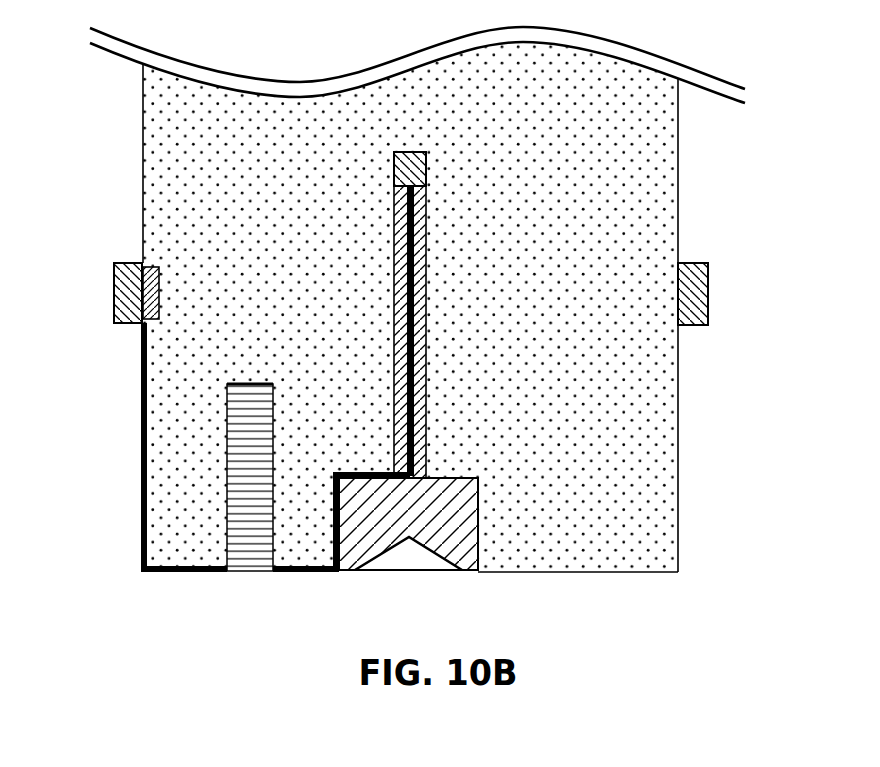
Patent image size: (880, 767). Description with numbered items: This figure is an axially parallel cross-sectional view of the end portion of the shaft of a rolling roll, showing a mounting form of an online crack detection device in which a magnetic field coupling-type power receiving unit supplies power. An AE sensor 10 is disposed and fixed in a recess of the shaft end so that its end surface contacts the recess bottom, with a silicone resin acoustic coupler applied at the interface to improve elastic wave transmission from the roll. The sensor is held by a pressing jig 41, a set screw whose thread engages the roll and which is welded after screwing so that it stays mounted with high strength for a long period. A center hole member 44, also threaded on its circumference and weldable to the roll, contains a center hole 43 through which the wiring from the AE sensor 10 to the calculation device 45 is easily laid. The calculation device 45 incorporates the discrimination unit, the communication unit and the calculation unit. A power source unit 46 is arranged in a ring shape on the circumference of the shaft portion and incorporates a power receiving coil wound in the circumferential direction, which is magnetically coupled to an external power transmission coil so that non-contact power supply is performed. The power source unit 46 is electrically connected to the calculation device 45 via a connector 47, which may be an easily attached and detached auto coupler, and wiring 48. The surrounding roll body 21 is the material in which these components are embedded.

The AE sensor 10 is at (394, 173).
The insulating layer 21 is at (658, 532).
The pressing jig 41 is at (426, 254).
The center hole 43 is at (413, 558).
The center hole member 44 is at (478, 505).
The calculation device 45 is at (226, 527).
The power source unit 46 is at (130, 323).
The connector 47 is at (148, 264).
The wiring 48 is at (142, 442).